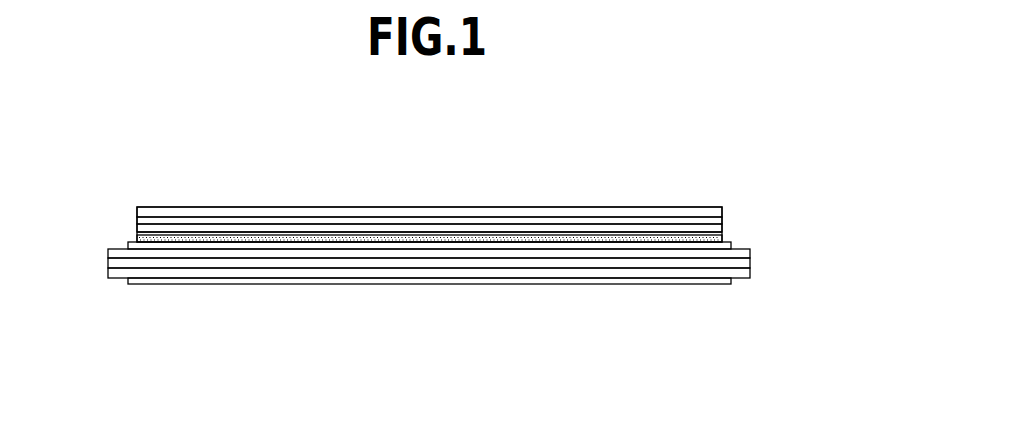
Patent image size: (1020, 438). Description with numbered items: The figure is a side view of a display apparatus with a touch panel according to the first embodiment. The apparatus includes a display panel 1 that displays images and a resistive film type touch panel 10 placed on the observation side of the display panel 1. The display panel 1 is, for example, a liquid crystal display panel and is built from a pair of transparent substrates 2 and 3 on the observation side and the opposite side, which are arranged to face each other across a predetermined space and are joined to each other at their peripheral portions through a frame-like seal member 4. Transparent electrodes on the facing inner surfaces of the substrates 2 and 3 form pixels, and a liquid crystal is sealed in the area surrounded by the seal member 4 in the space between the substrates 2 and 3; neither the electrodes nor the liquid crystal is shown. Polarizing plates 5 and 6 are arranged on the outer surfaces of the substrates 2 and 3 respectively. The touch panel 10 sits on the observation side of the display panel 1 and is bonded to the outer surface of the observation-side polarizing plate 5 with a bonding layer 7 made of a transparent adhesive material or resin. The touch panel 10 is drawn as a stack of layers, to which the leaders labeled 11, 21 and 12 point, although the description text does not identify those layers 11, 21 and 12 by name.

The display panel 1 is at (449, 279).
The touch panel 10 is at (418, 176).
The transparent substrate 2 is at (740, 251).
The transparent substrate 3 is at (744, 272).
The seal member 4 is at (690, 263).
The polarizing plate 5 is at (205, 247).
The polarizing plate 6 is at (301, 284).
The bonding layer 7 is at (137, 240).
The first layer 11 is at (281, 212).
The intermediate layer 21 is at (404, 220).
The second layer 12 is at (528, 230).